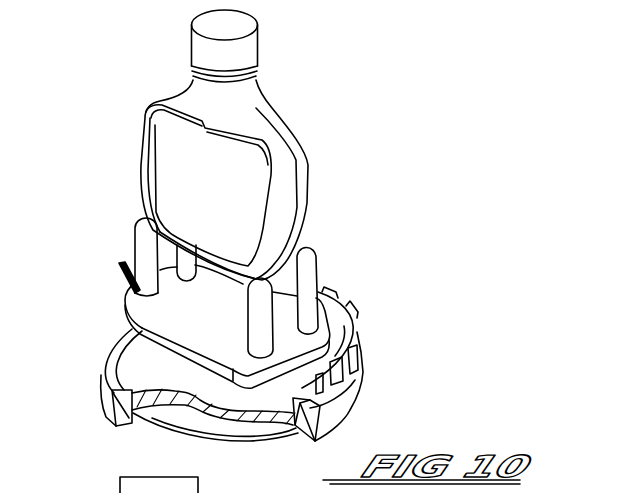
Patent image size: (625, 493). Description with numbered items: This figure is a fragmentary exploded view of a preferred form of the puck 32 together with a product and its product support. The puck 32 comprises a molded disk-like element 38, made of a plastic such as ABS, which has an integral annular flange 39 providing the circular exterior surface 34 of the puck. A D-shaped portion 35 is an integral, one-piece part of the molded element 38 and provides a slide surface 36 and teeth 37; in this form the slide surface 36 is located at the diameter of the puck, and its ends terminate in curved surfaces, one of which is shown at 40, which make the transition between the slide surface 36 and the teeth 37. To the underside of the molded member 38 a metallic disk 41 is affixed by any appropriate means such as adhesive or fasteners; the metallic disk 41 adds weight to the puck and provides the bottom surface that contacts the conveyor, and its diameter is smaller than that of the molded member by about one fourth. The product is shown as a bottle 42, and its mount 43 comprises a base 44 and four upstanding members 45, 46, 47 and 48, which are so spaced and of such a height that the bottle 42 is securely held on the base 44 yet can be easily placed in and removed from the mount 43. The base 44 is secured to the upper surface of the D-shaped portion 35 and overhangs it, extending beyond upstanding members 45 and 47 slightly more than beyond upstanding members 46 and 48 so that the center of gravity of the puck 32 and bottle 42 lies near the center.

The puck 32 is at (363, 379).
The circular exterior surface 34 is at (332, 422).
The D-shaped portion 35 is at (333, 328).
The slide surface 36 is at (262, 428).
The teeth 37 is at (358, 322).
The molded disk-like element 38 is at (360, 397).
The annular flange 39 is at (340, 415).
The curved surface 40 is at (299, 470).
The metallic disk 41 is at (165, 418).
The bottle 42 is at (310, 162).
The mount 43 is at (107, 260).
The base 44 is at (152, 312).
The upstanding member 45 is at (255, 276).
The upstanding member 46 is at (311, 252).
The upstanding member 47 is at (145, 225).
The upstanding member 48 is at (186, 279).